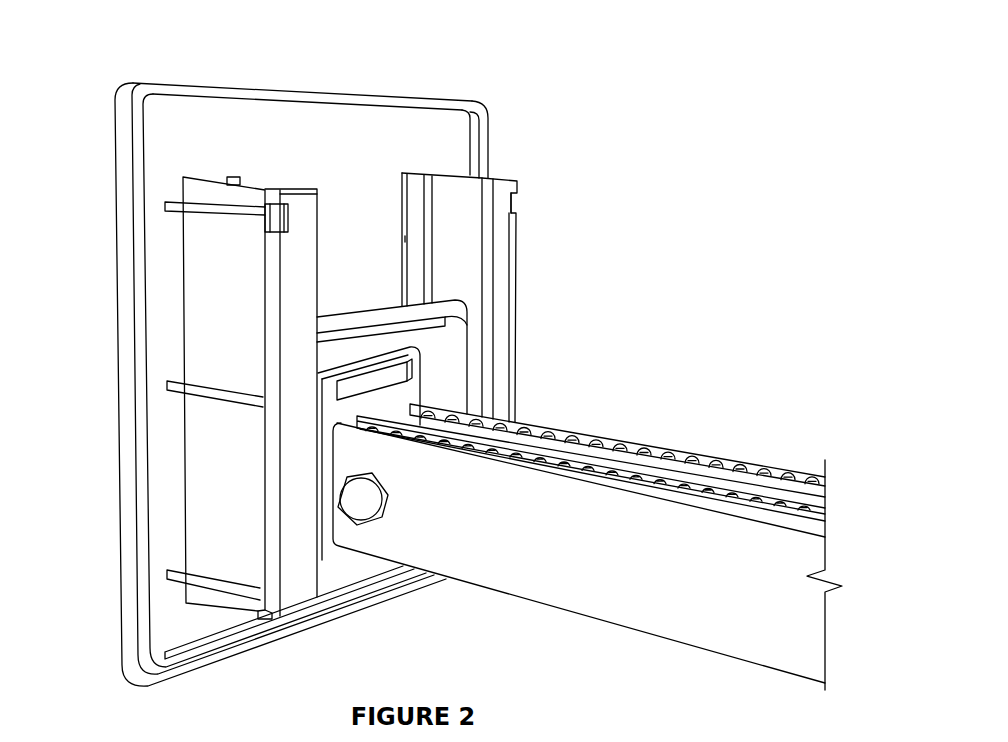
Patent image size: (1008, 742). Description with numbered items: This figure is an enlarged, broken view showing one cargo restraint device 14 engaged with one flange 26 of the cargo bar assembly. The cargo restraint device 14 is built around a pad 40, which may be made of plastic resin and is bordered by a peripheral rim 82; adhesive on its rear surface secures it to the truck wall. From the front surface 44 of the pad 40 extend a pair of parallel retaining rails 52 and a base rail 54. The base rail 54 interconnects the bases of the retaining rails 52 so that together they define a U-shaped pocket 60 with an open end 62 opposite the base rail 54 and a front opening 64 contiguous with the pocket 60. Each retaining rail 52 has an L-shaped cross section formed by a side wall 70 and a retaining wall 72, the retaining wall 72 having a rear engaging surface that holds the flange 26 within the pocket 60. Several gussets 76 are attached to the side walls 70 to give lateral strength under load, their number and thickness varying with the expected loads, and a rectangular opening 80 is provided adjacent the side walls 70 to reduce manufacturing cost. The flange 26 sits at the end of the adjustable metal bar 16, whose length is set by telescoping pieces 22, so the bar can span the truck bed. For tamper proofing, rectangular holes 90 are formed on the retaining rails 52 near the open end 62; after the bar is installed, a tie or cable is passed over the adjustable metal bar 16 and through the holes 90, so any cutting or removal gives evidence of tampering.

The cargo restraint device 14 is at (341, 355).
The adjustable metal bar 16 is at (587, 547).
The telescoping pieces 22 is at (711, 458).
The flange 26 is at (453, 352).
The pad 40 is at (397, 96).
The front surface 44 is at (453, 161).
The retaining rails 52 is at (330, 396).
The base rail 54 is at (337, 588).
The U-shaped pocket 60 is at (320, 215).
The open end 62 is at (381, 151).
The front opening 64 is at (483, 292).
The side wall 70 is at (207, 308).
The retaining wall 72 is at (293, 278).
The gussets 76 is at (183, 195).
The rectangular opening 80 is at (235, 176).
The peripheral rim 82 is at (197, 84).
The rectangular holes 90 is at (268, 222).